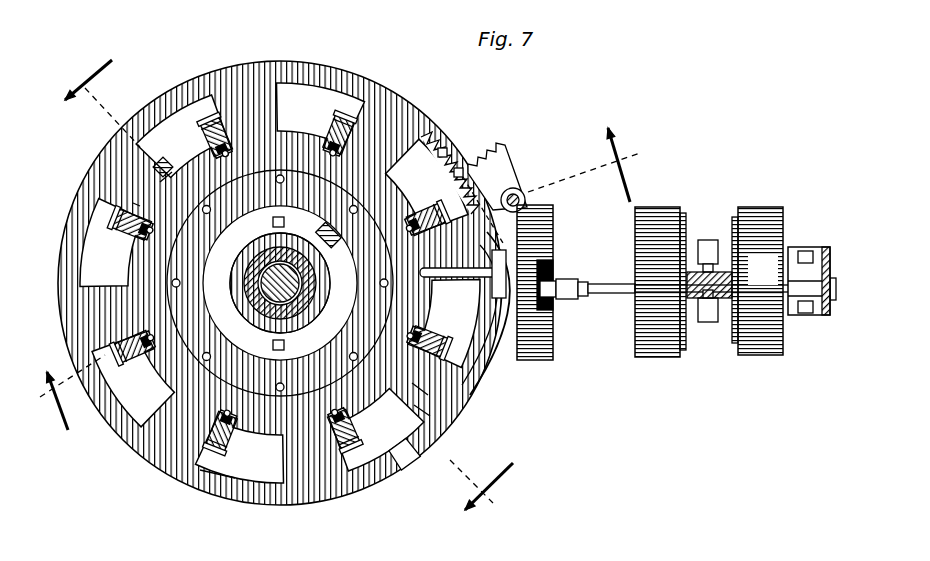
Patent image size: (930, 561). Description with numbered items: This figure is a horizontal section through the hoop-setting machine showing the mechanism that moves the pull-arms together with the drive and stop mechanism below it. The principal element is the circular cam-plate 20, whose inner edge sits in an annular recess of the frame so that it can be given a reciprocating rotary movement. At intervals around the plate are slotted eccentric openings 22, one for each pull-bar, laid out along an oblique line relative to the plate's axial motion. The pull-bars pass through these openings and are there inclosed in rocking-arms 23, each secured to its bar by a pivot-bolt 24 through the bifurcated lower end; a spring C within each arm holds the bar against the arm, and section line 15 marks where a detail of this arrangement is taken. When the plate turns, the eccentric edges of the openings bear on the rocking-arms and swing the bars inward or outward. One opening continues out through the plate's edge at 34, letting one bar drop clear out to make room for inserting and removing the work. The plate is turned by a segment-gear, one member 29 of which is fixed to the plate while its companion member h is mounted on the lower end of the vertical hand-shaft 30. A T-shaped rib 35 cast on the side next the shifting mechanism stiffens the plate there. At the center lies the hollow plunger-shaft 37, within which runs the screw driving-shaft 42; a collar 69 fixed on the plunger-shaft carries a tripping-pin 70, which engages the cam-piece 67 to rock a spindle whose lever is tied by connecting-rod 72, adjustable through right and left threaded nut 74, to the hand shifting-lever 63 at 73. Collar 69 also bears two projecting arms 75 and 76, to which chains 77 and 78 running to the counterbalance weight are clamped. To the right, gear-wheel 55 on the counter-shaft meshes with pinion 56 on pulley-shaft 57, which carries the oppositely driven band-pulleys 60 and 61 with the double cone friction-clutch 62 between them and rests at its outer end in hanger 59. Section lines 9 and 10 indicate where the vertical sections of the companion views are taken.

The section line 9 is at (344, 279).
The section line 10 is at (286, 293).
The section line 15 is at (214, 482).
The cam-plate 20 is at (279, 63).
The slotted eccentric openings 22 is at (279, 282).
The rocking-arms 23 is at (233, 153).
The pivot-bolt 24 is at (133, 203).
The segment-gear member 29 is at (445, 160).
The hand-shaft 30 is at (521, 195).
The cut-out opening 34 is at (410, 456).
The T-shaped rib 35 is at (465, 313).
The plunger-shaft 37 is at (257, 293).
The screw driving-shaft 42 is at (252, 306).
The gear-wheel 55 is at (534, 361).
The pinion 56 is at (547, 282).
The pulley-shaft 57 is at (625, 286).
The hanger 59 is at (818, 315).
The band-pulley 60 is at (657, 282).
The band-pulley 61 is at (760, 281).
The double cone friction-clutch 62 is at (684, 235).
The hand shifting-lever 63 is at (722, 268).
The cam-piece 67 is at (329, 225).
The collar 69 is at (233, 270).
The tripping-pin 70 is at (284, 222).
The connecting-rod 72 is at (625, 294).
The attachment point of connecting-rod to hand-lever 73 is at (710, 322).
The right and left threaded nut 74 is at (566, 300).
The projecting arm 75 is at (434, 417).
The projecting arm 76 is at (157, 160).
The chain 77 is at (203, 203).
The chain 78 is at (432, 392).
The spring C is at (228, 118).
The companion segment-gear member h is at (500, 168).